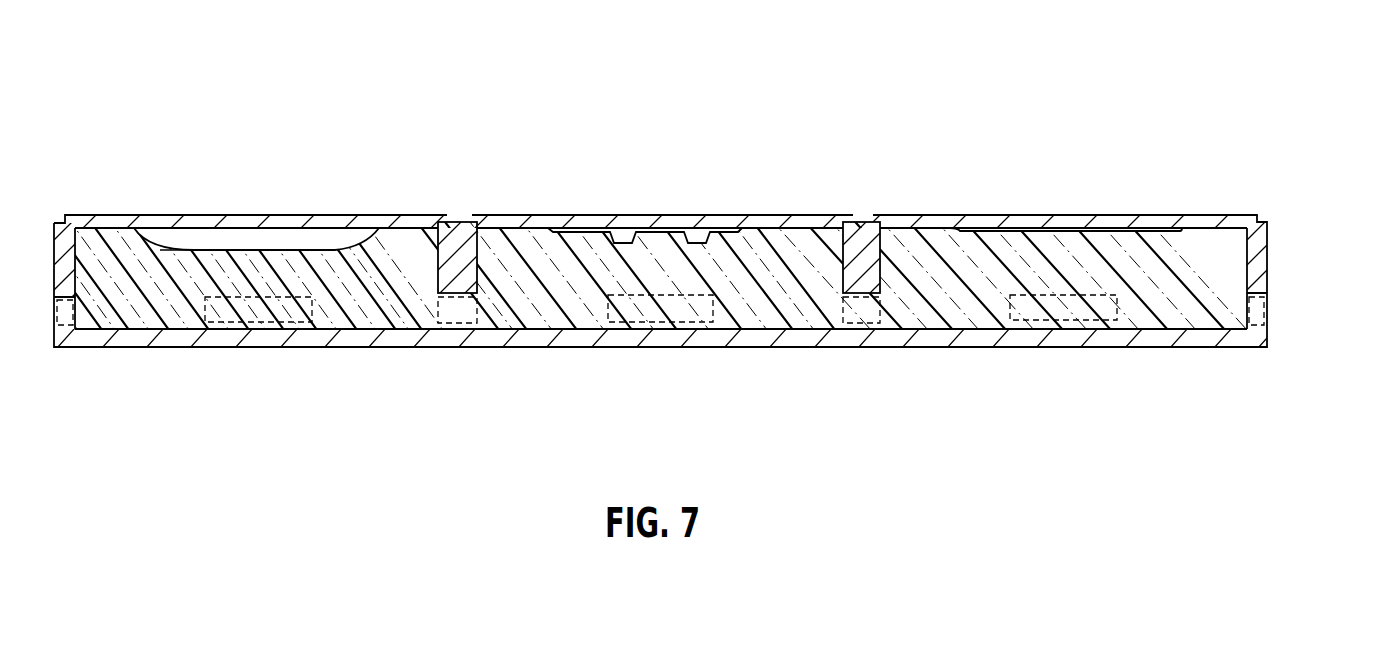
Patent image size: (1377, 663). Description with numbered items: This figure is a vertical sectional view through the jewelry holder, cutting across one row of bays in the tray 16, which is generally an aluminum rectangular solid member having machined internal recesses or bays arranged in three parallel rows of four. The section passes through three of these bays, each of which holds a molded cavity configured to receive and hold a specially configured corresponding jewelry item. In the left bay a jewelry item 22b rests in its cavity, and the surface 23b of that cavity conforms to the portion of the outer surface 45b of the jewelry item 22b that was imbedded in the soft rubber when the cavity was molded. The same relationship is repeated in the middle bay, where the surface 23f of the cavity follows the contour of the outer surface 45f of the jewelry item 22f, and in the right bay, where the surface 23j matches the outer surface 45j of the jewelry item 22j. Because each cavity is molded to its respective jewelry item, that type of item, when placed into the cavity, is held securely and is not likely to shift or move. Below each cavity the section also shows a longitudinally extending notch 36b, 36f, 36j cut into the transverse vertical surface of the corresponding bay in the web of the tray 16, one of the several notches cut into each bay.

The tray 16 is at (1272, 140).
The jewelry item 22b is at (205, 226).
The outer surface of jewelry item 45b is at (297, 228).
The surface of cavity 23b is at (173, 252).
The notch 36b is at (271, 313).
The jewelry item 22f is at (612, 224).
The outer surface of jewelry item 45f is at (735, 226).
The surface of cavity 23f is at (570, 235).
The notch 36f is at (692, 300).
The jewelry item 22j is at (1056, 224).
The outer surface of jewelry item 45j is at (1130, 226).
The surface of cavity 23j is at (1000, 235).
The notch 36j is at (1068, 318).